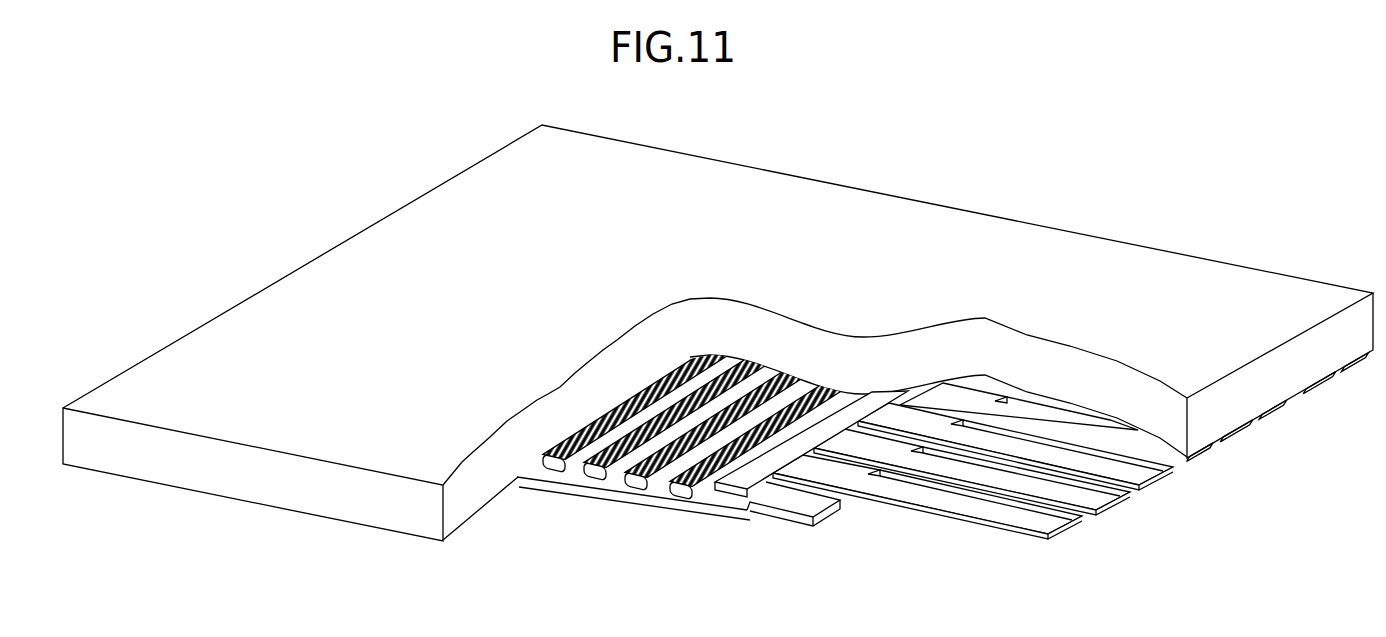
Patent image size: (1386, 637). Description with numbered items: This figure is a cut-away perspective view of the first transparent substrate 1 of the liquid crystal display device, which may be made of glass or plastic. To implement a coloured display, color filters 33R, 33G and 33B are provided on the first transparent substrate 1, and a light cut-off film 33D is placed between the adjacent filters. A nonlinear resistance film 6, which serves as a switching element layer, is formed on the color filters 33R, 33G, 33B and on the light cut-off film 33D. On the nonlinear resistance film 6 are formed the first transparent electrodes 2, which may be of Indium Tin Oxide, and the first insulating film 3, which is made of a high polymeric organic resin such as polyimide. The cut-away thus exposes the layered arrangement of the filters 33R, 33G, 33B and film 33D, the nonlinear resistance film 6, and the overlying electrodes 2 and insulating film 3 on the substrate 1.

The first transparent substrate 1 is at (1050, 244).
The first transparent electrodes 2 is at (1012, 532).
The first insulating film 3 is at (518, 478).
The nonlinear resistance film 6 is at (703, 504).
The red color filter 33R is at (553, 471).
The green color filter 33G is at (596, 480).
The blue color filter 33B is at (638, 489).
The light cut-off film 33D is at (710, 498).